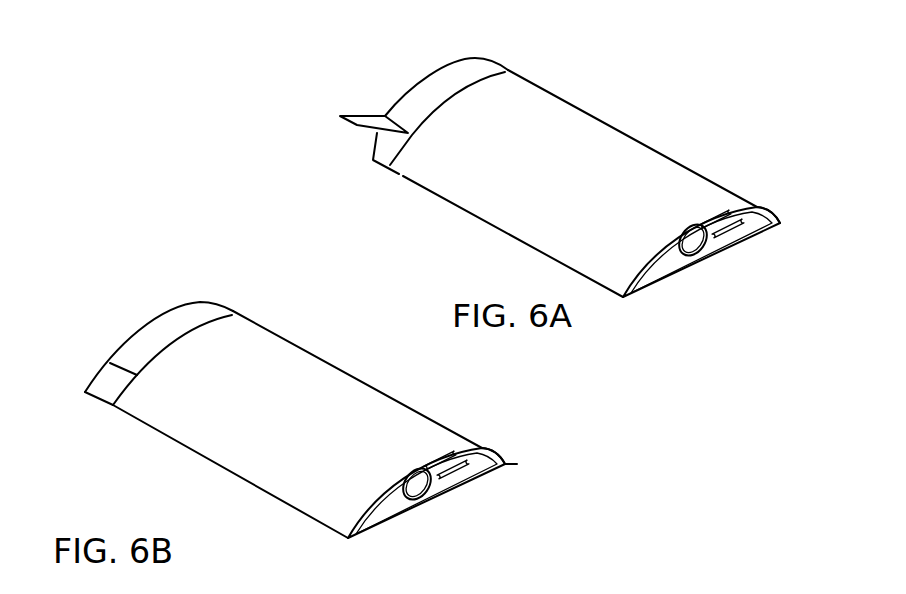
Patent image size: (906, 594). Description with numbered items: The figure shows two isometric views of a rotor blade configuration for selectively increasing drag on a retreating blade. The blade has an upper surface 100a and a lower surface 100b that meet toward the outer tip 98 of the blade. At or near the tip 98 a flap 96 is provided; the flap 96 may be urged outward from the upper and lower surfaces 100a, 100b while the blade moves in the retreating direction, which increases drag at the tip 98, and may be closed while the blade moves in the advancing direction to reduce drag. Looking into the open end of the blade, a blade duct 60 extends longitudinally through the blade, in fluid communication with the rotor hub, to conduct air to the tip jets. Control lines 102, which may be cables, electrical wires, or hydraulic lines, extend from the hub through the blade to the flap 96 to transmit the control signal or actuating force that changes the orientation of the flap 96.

In FIG. 6A, the tip 98 is at (412, 68).
In FIG. 6B, the tip 98 is at (138, 312).
In FIG. 6A, the flap 96 is at (373, 160).
In FIG. 6B, the flap 96 is at (103, 386).
In FIG. 6A, the upper surface 100a is at (623, 147).
In FIG. 6B, the upper surface 100a is at (265, 358).
In FIG. 6A, the lower surface 100b is at (657, 287).
In FIG. 6B, the lower surface 100b is at (380, 527).
In FIG. 6A, the control line 102 is at (740, 220).
In FIG. 6B, the control line 102 is at (520, 447).
In FIG. 6A, the blade duct 60 is at (693, 243).
In FIG. 6B, the blade duct 60 is at (416, 486).